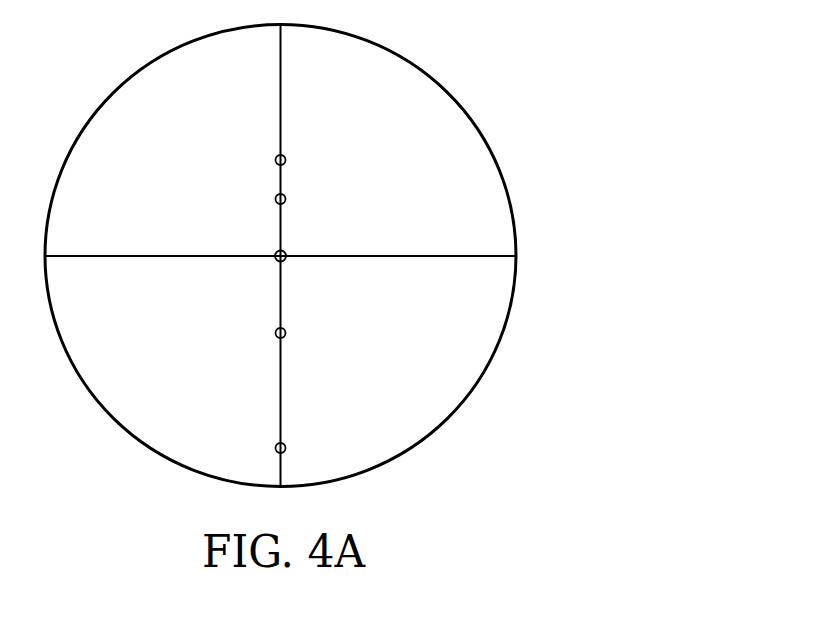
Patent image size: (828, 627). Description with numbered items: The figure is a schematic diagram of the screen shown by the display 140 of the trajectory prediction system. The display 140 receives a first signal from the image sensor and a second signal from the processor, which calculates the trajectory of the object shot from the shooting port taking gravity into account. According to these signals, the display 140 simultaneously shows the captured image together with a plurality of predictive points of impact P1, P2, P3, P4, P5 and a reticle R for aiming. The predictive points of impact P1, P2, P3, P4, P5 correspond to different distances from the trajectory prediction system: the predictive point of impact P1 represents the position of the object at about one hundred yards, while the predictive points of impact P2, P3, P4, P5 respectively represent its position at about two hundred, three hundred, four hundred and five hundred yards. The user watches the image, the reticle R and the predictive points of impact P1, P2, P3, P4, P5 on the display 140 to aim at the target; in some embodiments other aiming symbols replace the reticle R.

The display 140 is at (438, 78).
The reticle R is at (397, 255).
The predictive point of impact P1 is at (274, 160).
The predictive point of impact P2 is at (274, 199).
The predictive point of impact P3 is at (286, 252).
The predictive point of impact P4 is at (274, 333).
The predictive point of impact P5 is at (274, 448).